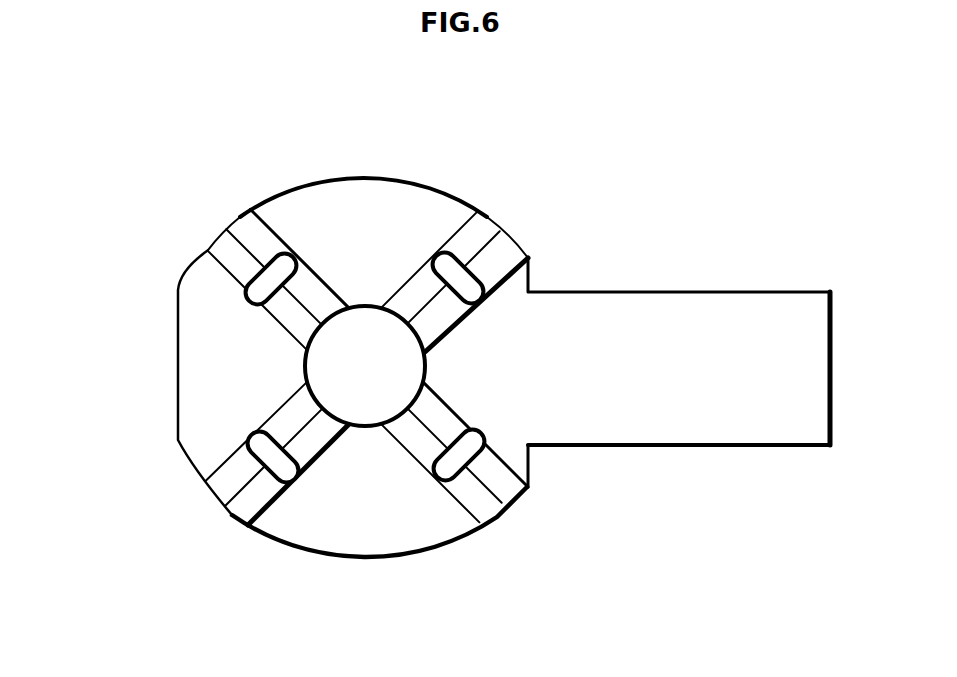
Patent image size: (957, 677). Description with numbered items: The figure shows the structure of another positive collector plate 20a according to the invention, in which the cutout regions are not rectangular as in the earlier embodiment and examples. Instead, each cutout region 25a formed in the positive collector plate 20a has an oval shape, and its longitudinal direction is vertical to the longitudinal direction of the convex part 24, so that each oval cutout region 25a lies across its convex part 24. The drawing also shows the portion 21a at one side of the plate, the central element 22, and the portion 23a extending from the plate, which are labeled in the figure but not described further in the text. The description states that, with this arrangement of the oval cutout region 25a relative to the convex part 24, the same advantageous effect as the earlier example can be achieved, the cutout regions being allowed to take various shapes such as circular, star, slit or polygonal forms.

The positive collector plate 20a is at (334, 181).
The flat side portion 21a is at (188, 340).
The central shaft hole 22 is at (352, 360).
The rectangular arm portion 23a is at (735, 300).
The convex part 24 is at (490, 220).
The cutout region 25a is at (218, 246).